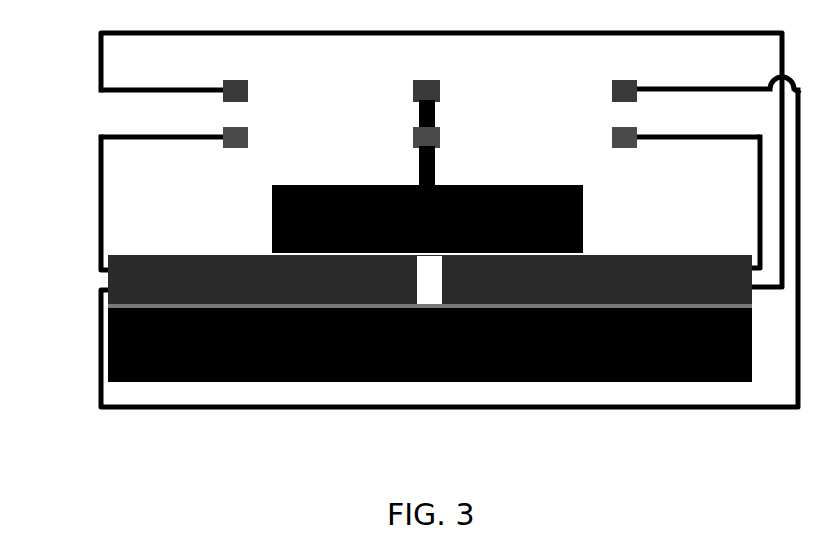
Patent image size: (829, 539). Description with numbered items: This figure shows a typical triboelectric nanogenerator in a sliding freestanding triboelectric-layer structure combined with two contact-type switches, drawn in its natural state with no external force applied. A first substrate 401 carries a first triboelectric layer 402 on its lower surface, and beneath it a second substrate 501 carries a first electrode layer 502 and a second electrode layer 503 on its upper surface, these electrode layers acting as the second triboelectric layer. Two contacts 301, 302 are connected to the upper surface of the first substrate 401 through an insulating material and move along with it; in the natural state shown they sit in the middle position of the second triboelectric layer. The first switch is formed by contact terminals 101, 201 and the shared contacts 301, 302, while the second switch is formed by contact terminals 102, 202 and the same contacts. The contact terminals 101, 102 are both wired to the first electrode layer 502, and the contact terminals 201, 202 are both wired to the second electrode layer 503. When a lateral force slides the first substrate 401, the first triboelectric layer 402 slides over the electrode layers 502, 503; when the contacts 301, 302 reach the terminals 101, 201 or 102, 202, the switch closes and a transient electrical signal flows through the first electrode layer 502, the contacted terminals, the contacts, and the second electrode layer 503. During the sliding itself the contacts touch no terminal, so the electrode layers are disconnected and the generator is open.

The contact terminal 101 is at (653, 67).
The contact terminal 102 is at (227, 150).
The contact terminal 201 is at (653, 115).
The contact terminal 202 is at (226, 83).
The contact 301 is at (437, 101).
The contact 302 is at (441, 144).
The first substrate 401 is at (583, 187).
The first triboelectric layer 402 is at (582, 248).
The second substrate 501 is at (228, 382).
The first electrode layer 502 is at (108, 285).
The second electrode layer 503 is at (699, 257).